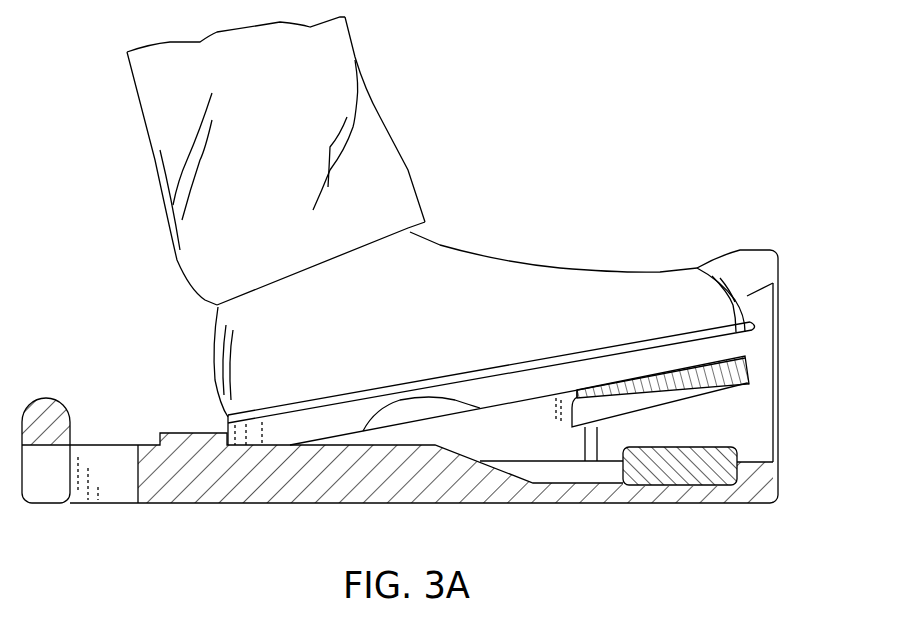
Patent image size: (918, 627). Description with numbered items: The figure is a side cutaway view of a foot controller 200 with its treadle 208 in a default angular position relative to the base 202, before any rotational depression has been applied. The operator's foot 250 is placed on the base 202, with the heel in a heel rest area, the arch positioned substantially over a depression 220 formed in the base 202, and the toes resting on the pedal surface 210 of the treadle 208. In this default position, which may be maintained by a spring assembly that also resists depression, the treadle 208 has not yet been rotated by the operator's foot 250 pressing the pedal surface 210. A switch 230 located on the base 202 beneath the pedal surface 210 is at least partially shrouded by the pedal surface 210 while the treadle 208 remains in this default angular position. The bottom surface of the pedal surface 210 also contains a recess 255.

The foot controller 200 is at (636, 58).
The base 202 is at (157, 458).
The treadle 208 is at (458, 430).
The pedal surface 210 is at (743, 373).
The depression 220 is at (557, 472).
The switch 230 is at (683, 477).
The operator's foot 250 is at (480, 268).
The recess 255 is at (663, 390).